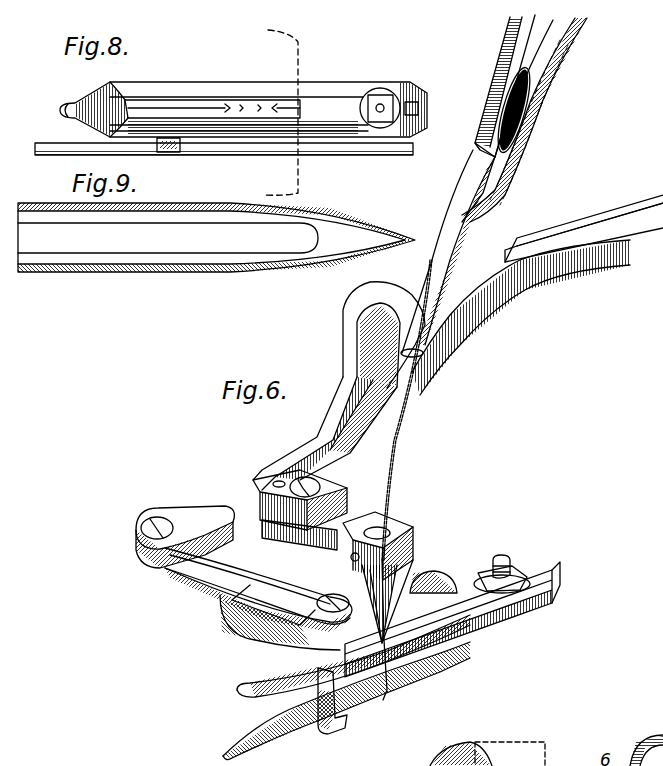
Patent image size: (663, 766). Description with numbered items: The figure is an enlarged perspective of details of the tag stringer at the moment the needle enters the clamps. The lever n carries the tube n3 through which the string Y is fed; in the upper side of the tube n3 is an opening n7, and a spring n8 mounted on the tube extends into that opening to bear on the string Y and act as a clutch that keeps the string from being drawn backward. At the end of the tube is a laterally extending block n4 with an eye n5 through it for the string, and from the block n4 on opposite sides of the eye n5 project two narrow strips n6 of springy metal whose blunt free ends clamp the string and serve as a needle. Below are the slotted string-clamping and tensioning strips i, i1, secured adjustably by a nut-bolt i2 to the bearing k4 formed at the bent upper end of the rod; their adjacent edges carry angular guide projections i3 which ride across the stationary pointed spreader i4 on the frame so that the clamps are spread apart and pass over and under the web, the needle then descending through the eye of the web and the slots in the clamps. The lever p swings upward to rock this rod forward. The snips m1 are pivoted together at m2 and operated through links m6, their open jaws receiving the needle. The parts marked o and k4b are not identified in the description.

In FIG. 8, the string-clamping and tensioning strip i is at (191, 86).
In FIG. 6, the string-clamping and tensioning strip i is at (260, 680).
In FIG. 8, the nut-bolt i2 is at (384, 94).
In FIG. 6, the nut-bolt i2 is at (505, 560).
In FIG. 8, the guide projection i3 is at (180, 150).
In FIG. 6, the guide projection i3 is at (340, 688).
In FIG. 8, the guide-finger or spreader i4 is at (323, 152).
In FIG. 9, the guide-finger or spreader i4 is at (152, 212).
In FIG. 6, the string-clamping and tensioning strip i1 is at (278, 722).
In FIG. 6, the lever n is at (470, 318).
In FIG. 6, the tube n3 is at (540, 108).
In FIG. 6, the block n4 is at (345, 515).
In FIG. 6, the eye n5 is at (391, 530).
In FIG. 6, the needle strips n6 is at (400, 568).
In FIG. 6, the opening n7 is at (505, 143).
In FIG. 6, the spring n8 is at (488, 78).
In FIG. 6, the arm o is at (584, 228).
In FIG. 6, the string Y is at (416, 432).
In FIG. 6, the link m6 is at (208, 521).
In FIG. 6, the pivot m2 is at (258, 590).
In FIG. 6, the snips m1 is at (237, 605).
In FIG. 6, the bearing k4 is at (462, 572).
In FIG. 6, the block fragment k4b is at (455, 748).
In FIG. 6, the lever p is at (648, 740).